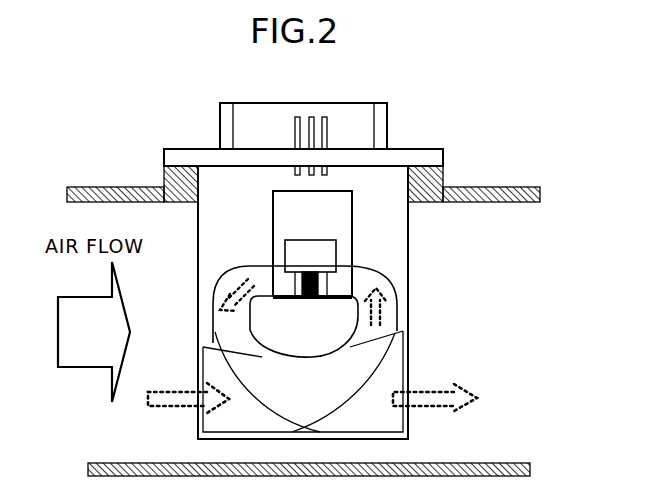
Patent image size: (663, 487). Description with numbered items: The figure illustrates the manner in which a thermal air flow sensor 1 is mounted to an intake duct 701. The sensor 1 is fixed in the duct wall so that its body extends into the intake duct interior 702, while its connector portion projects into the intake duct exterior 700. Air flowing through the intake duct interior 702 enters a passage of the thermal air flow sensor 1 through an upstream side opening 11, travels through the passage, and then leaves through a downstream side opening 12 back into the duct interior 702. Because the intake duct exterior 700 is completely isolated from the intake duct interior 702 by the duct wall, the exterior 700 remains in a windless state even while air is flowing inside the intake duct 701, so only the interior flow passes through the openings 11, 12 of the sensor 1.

The thermal air flow sensor 1 is at (220, 123).
The intake duct exterior 700 is at (304, 283).
The intake duct 701 is at (523, 203).
The intake duct interior 702 is at (447, 324).
The upstream side opening 11 is at (198, 413).
The downstream side opening 12 is at (408, 418).